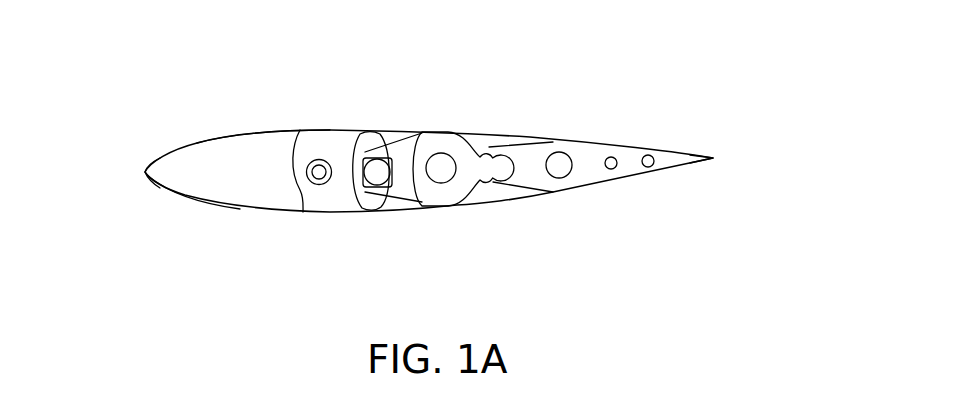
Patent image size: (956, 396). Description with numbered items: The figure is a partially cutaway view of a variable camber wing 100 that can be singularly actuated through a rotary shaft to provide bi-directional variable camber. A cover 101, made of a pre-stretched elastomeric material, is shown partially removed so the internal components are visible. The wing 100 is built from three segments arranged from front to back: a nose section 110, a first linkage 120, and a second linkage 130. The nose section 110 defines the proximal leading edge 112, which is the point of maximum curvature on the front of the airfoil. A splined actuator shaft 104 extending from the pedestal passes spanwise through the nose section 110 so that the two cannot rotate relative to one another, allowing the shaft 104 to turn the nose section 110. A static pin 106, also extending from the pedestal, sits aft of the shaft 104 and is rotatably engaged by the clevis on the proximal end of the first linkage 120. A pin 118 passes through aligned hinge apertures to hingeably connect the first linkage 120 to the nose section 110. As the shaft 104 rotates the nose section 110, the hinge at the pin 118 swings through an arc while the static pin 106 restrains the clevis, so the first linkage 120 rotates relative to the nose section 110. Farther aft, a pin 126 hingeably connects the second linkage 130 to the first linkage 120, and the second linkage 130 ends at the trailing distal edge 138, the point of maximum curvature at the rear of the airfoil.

The variable camber wing 100 is at (466, 140).
The cover 101 is at (197, 142).
The nose section 110 is at (258, 145).
The leading edge 112 is at (145, 170).
The actuator shaft 104 is at (320, 177).
The static pin 106 is at (377, 176).
The pin 118 is at (442, 164).
The first linkage 120 is at (482, 146).
The pin 126 is at (553, 162).
The second linkage 130 is at (630, 153).
The trailing distal edge 138 is at (712, 157).